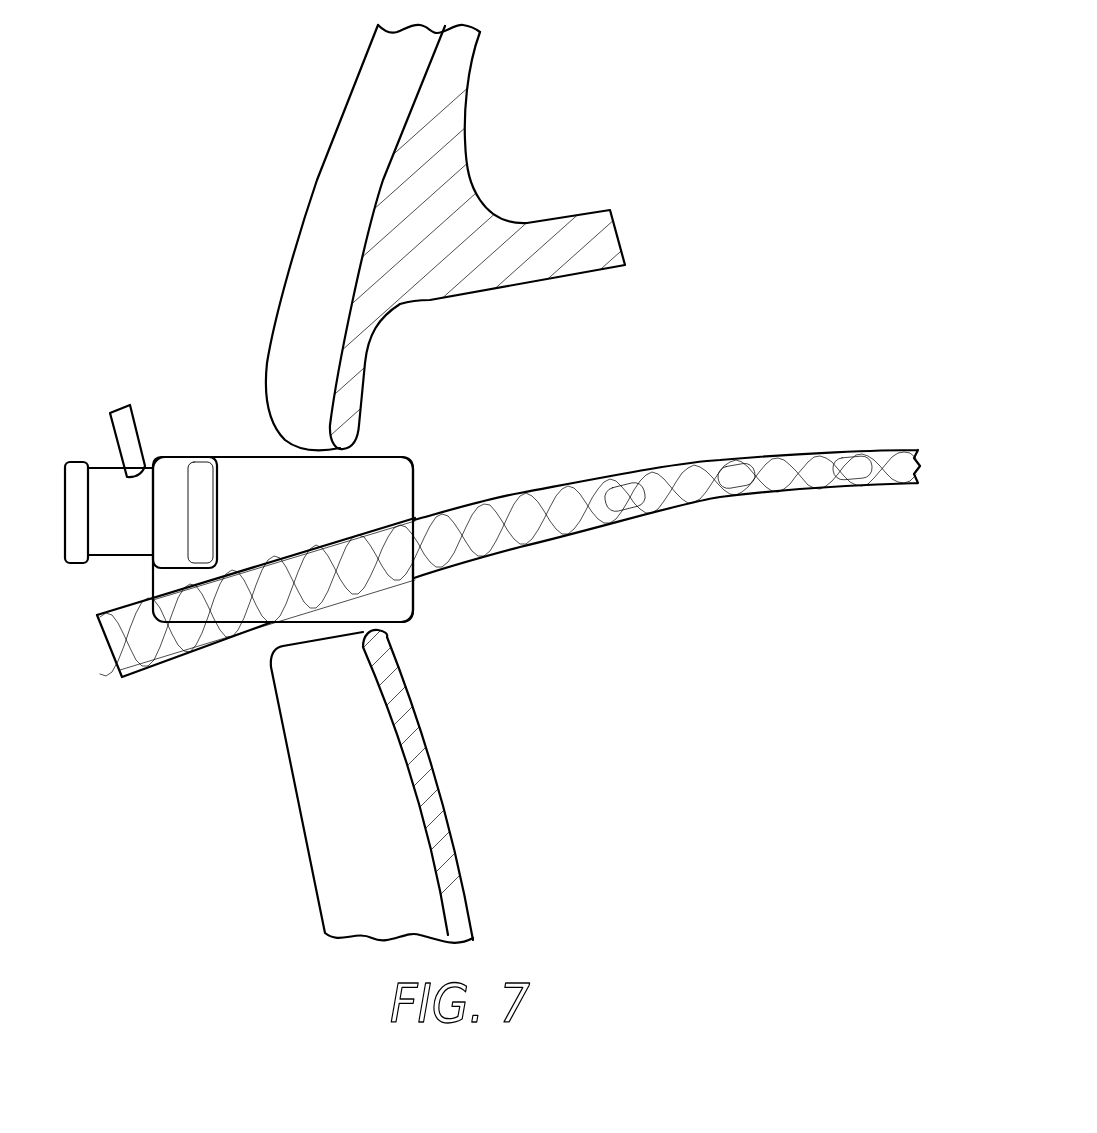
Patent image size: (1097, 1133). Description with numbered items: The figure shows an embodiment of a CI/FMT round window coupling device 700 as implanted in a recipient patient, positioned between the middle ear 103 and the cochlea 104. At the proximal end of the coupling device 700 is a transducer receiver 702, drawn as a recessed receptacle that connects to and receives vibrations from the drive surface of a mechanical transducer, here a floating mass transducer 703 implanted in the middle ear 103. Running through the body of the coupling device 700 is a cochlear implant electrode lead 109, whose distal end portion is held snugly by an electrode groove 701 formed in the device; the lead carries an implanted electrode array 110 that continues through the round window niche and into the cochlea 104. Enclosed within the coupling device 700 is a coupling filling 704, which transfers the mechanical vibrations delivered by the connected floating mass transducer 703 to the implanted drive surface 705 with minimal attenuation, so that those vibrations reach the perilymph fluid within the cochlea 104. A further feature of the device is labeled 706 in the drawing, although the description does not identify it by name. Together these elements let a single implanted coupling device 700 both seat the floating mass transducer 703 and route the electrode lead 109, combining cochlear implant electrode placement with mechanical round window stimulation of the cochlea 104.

The middle ear 103 is at (330, 238).
The cochlea 104 is at (574, 235).
The cochlear implant electrode lead 109 is at (112, 662).
The implanted electrode array 110 is at (753, 455).
The CI/FMT round window coupling device 700 is at (411, 435).
The electrode groove 701 is at (403, 572).
The transducer receiver 702 is at (177, 462).
The floating mass transducer 703 is at (105, 513).
The coupling filling 704 is at (283, 539).
The implanted drive surface 705 is at (413, 472).
The housing bottom edge 706 is at (330, 622).